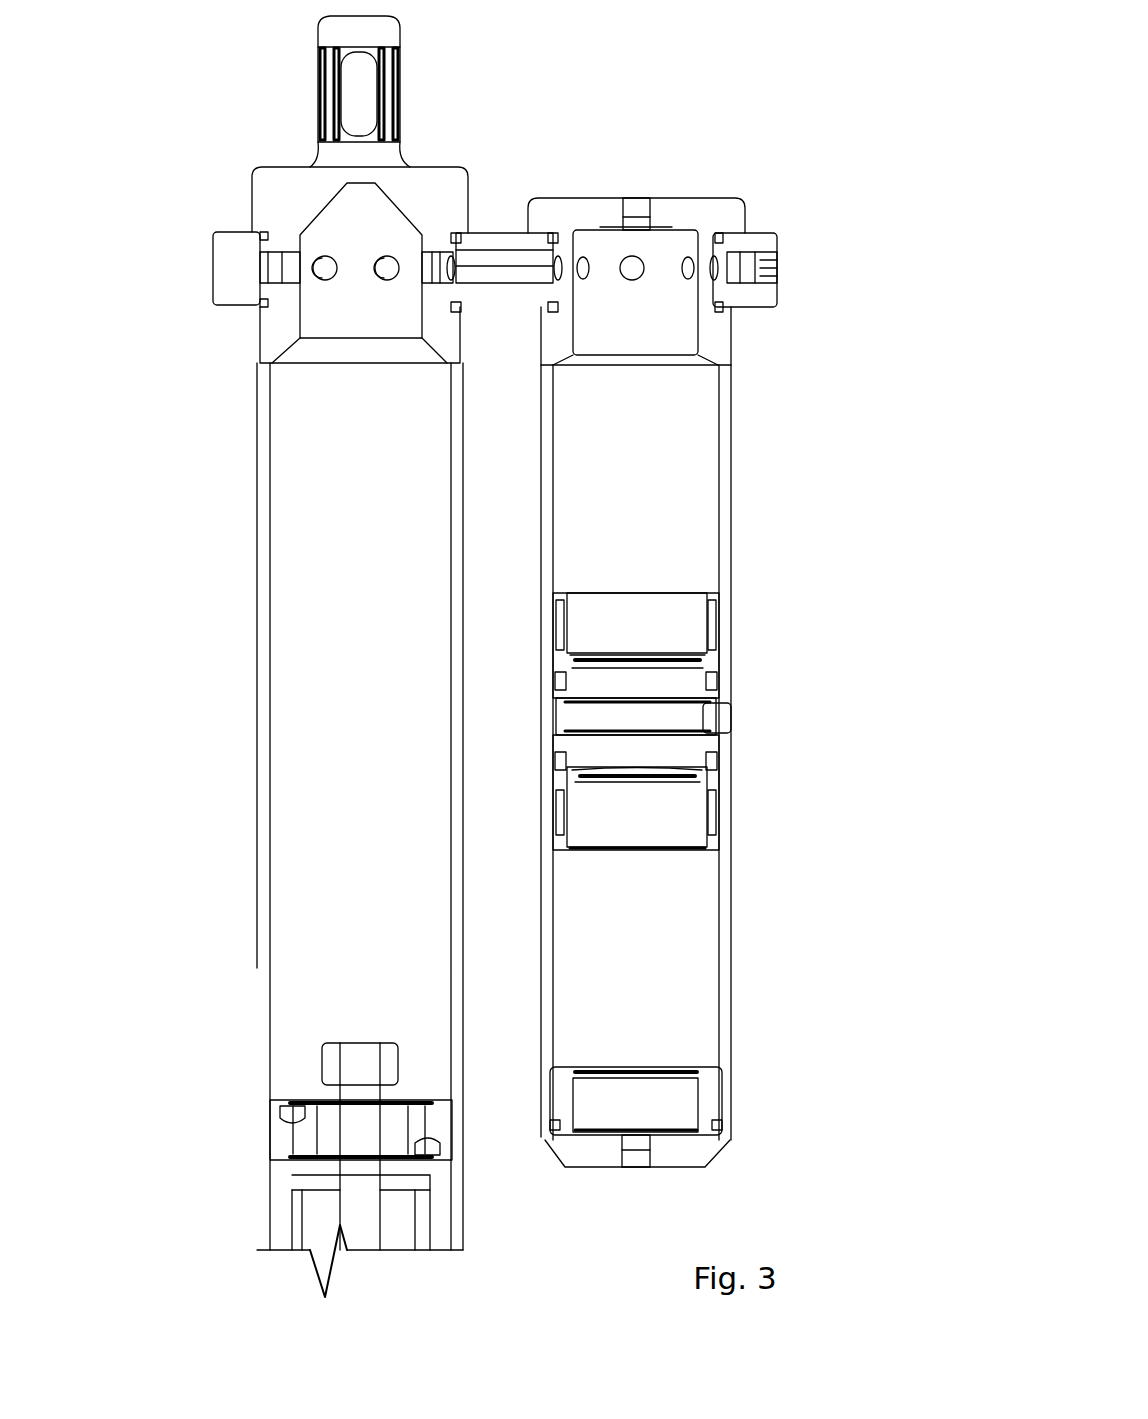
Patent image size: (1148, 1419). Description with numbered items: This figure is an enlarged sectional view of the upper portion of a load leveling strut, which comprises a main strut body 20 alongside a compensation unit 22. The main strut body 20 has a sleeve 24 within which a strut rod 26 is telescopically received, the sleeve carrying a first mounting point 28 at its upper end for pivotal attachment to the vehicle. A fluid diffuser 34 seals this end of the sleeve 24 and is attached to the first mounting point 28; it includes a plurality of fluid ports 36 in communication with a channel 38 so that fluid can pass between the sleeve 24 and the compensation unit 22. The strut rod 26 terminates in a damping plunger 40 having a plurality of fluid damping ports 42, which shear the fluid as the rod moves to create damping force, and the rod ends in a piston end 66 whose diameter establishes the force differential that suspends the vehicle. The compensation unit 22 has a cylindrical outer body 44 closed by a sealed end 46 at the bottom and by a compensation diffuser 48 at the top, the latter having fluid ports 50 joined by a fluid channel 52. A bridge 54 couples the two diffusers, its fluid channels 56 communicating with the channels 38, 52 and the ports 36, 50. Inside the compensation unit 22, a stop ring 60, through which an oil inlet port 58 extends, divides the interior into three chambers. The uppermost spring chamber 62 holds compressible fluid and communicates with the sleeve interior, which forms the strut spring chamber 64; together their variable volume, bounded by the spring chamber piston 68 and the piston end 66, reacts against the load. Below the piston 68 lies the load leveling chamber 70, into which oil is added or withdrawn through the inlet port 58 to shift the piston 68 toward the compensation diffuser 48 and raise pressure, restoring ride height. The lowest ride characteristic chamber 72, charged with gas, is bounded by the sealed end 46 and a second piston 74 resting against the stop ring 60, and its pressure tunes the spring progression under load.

The main strut body 20 is at (208, 535).
The compensation unit 22 is at (757, 400).
The sleeve 24 is at (262, 630).
The strut rod 26 is at (325, 1232).
The first mounting point 28 is at (318, 68).
The fluid diffuser 34 is at (262, 192).
The fluid ports 36 is at (387, 282).
The channel 38 is at (290, 268).
The damping plunger 40 is at (285, 1143).
The fluid damping ports 42 is at (307, 1135).
The cylindrical outer body 44 is at (725, 920).
The sealed end 46 is at (702, 1148).
The compensation diffuser 48 is at (678, 205).
The fluid ports 50 is at (688, 280).
The fluid channel 52 is at (555, 258).
The bridge 54 is at (492, 232).
The fluid channels 56 is at (507, 266).
The oil inlet port 58 is at (718, 717).
The stop ring 60 is at (558, 722).
The spring chamber 62 is at (653, 520).
The strut spring chamber 64 is at (300, 795).
The piston end 66 is at (300, 1182).
The spring chamber piston 68 is at (712, 600).
The load leveling chamber 70 is at (605, 715).
The ride characteristic chamber 72 is at (675, 983).
The second piston 74 is at (712, 783).